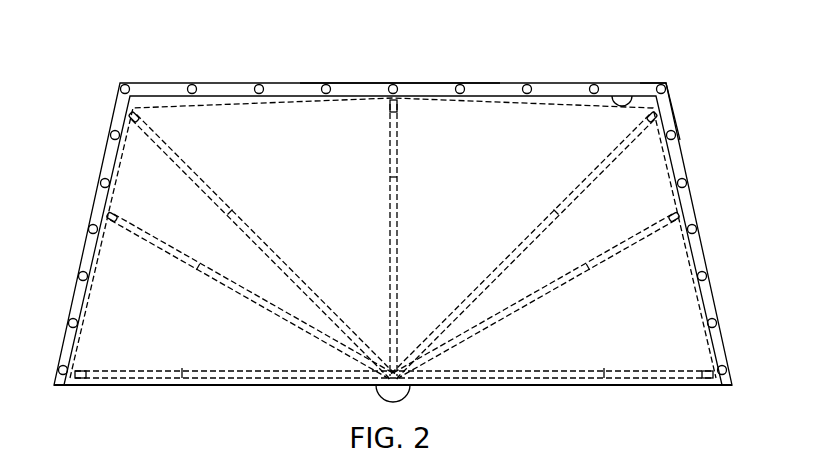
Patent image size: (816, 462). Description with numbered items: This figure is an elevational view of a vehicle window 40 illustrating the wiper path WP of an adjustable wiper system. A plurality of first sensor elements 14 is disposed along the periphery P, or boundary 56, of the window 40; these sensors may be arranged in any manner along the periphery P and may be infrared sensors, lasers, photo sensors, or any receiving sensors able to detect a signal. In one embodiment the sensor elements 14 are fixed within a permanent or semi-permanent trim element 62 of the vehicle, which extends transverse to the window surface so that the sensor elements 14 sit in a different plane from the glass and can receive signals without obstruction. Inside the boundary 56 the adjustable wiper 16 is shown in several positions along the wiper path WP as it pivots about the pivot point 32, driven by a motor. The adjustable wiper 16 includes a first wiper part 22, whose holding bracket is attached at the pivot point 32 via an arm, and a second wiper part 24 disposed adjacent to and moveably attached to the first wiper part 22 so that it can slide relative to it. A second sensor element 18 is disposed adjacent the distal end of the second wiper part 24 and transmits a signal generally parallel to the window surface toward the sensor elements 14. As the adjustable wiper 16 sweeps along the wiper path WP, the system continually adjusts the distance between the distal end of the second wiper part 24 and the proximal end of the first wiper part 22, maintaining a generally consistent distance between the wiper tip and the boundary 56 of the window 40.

The first sensor elements 14 is at (192, 84).
The adjustable wiper 16 is at (400, 243).
The second sensor element 18 is at (390, 108).
The first wiper part 22 is at (390, 272).
The second wiper part 24 is at (397, 145).
The pivot point 32 is at (393, 380).
The window 40 is at (150, 350).
The boundary 56 is at (428, 83).
The trim element 62 is at (641, 83).
The periphery P is at (622, 100).
The wiper path WP is at (526, 150).